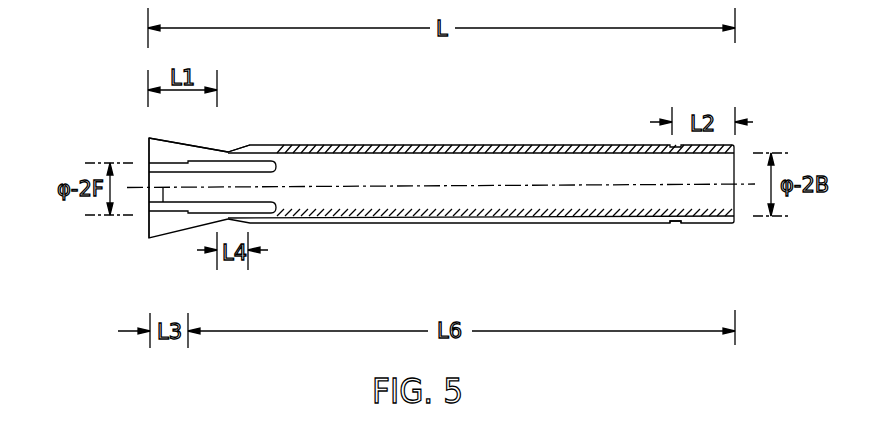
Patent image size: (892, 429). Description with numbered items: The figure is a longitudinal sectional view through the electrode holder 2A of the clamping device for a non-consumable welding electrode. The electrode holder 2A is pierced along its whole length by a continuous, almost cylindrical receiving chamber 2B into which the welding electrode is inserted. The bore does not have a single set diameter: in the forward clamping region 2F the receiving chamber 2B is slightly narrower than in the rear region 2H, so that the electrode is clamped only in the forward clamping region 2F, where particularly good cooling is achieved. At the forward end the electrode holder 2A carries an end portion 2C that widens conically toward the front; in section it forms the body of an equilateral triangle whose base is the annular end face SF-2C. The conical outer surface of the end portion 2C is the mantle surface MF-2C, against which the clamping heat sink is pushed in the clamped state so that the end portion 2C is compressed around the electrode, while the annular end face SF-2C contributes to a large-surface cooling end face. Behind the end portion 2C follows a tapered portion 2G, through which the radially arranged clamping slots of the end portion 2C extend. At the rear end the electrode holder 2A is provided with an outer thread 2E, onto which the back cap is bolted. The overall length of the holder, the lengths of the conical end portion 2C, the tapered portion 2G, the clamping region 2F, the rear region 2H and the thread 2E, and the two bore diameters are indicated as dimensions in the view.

The electrode holder 2A is at (468, 126).
The receiving chamber 2B is at (557, 192).
The end portion 2C is at (163, 228).
The thread 2E is at (693, 225).
The clamping region 2F is at (147, 214).
The tapered portion 2G is at (228, 149).
The rear region 2H is at (420, 200).
The mantle surface MF-2C is at (167, 140).
The annular end face SF-2C is at (144, 157).